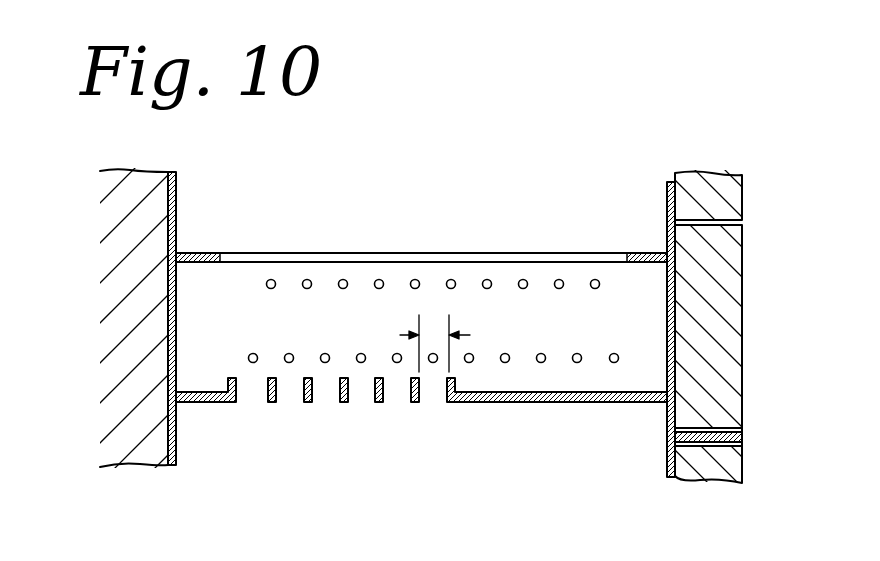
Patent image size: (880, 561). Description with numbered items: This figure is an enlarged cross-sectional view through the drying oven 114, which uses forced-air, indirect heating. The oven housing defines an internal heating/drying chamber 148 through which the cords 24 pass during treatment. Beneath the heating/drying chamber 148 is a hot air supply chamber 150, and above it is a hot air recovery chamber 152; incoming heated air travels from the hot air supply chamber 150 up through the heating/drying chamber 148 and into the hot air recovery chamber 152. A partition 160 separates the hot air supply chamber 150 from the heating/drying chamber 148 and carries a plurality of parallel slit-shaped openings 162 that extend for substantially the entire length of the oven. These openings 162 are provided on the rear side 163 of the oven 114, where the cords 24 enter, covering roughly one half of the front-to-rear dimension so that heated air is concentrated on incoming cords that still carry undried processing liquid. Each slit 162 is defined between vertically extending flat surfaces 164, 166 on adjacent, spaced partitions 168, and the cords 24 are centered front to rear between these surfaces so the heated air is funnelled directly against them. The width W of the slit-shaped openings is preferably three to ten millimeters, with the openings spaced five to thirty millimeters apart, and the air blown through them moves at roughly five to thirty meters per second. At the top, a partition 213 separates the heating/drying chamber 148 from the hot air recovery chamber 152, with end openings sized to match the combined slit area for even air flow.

The oven 114 is at (518, 162).
The hot air recovery chamber 152 is at (428, 175).
The partition 213 is at (635, 255).
The cords 24 is at (248, 352).
The partitions 168 is at (376, 378).
The heating/drying chamber 148 is at (585, 341).
The width of the slit-shaped openings W is at (448, 343).
The vertically extending flat surface 164 is at (246, 385).
The slit-shaped openings 162 is at (240, 405).
The vertically extending flat surface 166 is at (274, 400).
The partition 160 is at (582, 403).
The hot air supply chamber 150 is at (485, 470).
The rear side 163 is at (88, 428).